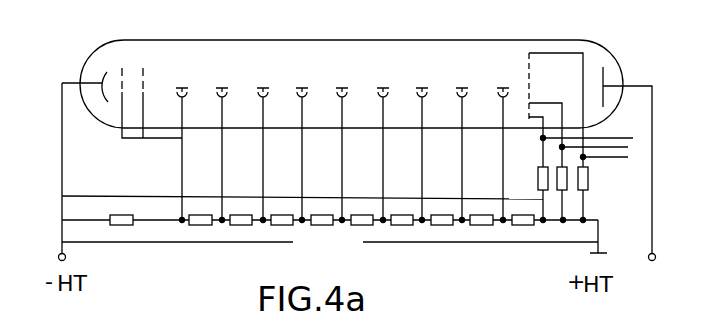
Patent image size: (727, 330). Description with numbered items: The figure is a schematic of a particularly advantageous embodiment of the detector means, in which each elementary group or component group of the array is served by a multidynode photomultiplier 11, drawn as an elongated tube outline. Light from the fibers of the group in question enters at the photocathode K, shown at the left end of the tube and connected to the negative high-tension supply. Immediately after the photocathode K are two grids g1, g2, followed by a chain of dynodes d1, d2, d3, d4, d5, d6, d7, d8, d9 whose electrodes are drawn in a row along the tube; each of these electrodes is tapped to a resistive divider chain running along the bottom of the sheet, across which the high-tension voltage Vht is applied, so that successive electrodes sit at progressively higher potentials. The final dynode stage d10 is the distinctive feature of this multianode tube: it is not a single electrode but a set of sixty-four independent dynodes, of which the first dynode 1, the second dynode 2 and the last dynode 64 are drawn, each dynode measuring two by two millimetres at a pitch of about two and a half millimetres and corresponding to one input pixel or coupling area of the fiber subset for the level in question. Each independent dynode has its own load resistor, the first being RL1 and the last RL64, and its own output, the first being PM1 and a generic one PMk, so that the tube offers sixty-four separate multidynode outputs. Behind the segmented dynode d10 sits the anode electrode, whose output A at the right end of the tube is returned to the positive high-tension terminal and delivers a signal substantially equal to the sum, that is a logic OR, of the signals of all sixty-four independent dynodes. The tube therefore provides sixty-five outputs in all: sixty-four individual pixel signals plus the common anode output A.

The multidynode photomultiplier 11 is at (460, 41).
The photocathode K is at (75, 161).
The first grid g1 is at (144, 92).
The second grid g2 is at (143, 92).
The dynode 1 d1 is at (182, 143).
The dynode 2 d2 is at (222, 143).
The dynode 3 d3 is at (263, 143).
The dynode 4 d4 is at (302, 143).
The dynode 5 d5 is at (342, 143).
The dynode 6 d6 is at (383, 143).
The dynode 7 d7 is at (422, 143).
The dynode 8 d8 is at (462, 143).
The dynode 9 d9 is at (503, 143).
The segmented last dynode d10 is at (547, 87).
The independent dynode 1 is at (534, 117).
The independent dynode 2 is at (545, 125).
The independent dynode 64 is at (539, 106).
The anode output A is at (634, 162).
The output of segment 1 PM1 is at (592, 136).
The output of segment k PMk is at (601, 169).
The load resistor of segment 1 RL1 is at (524, 188).
The load resistor of segment 64 RL64 is at (610, 193).
The high tension supply voltage Vht is at (330, 247).